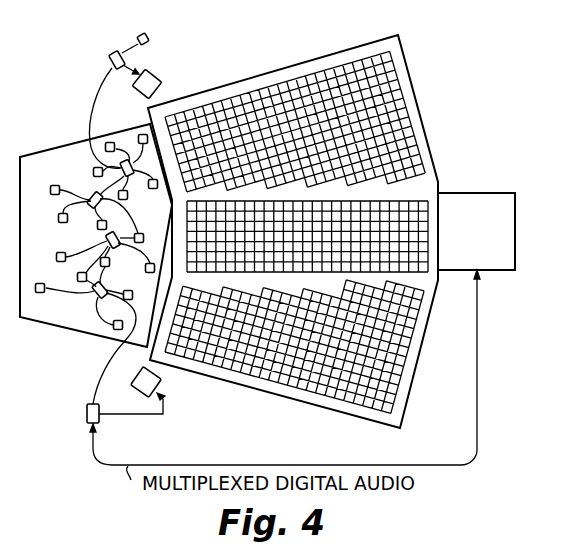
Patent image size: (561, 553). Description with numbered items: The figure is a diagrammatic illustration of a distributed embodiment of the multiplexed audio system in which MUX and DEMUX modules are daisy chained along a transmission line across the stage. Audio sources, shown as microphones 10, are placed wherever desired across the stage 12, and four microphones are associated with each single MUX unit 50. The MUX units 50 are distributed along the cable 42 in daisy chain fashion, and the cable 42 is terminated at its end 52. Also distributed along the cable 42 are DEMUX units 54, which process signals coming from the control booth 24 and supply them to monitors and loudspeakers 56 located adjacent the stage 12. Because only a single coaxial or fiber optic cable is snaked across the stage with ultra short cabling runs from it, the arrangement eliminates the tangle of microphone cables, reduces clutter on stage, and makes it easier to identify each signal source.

The microphones 10 is at (92, 164).
The stage 12 is at (22, 220).
The control booth 24 is at (466, 239).
The cable 42 is at (95, 107).
The MUX unit 50 is at (104, 240).
The termination 52 is at (152, 38).
The DEMUX unit 54 is at (112, 57).
The monitors and loudspeakers 56 is at (161, 82).